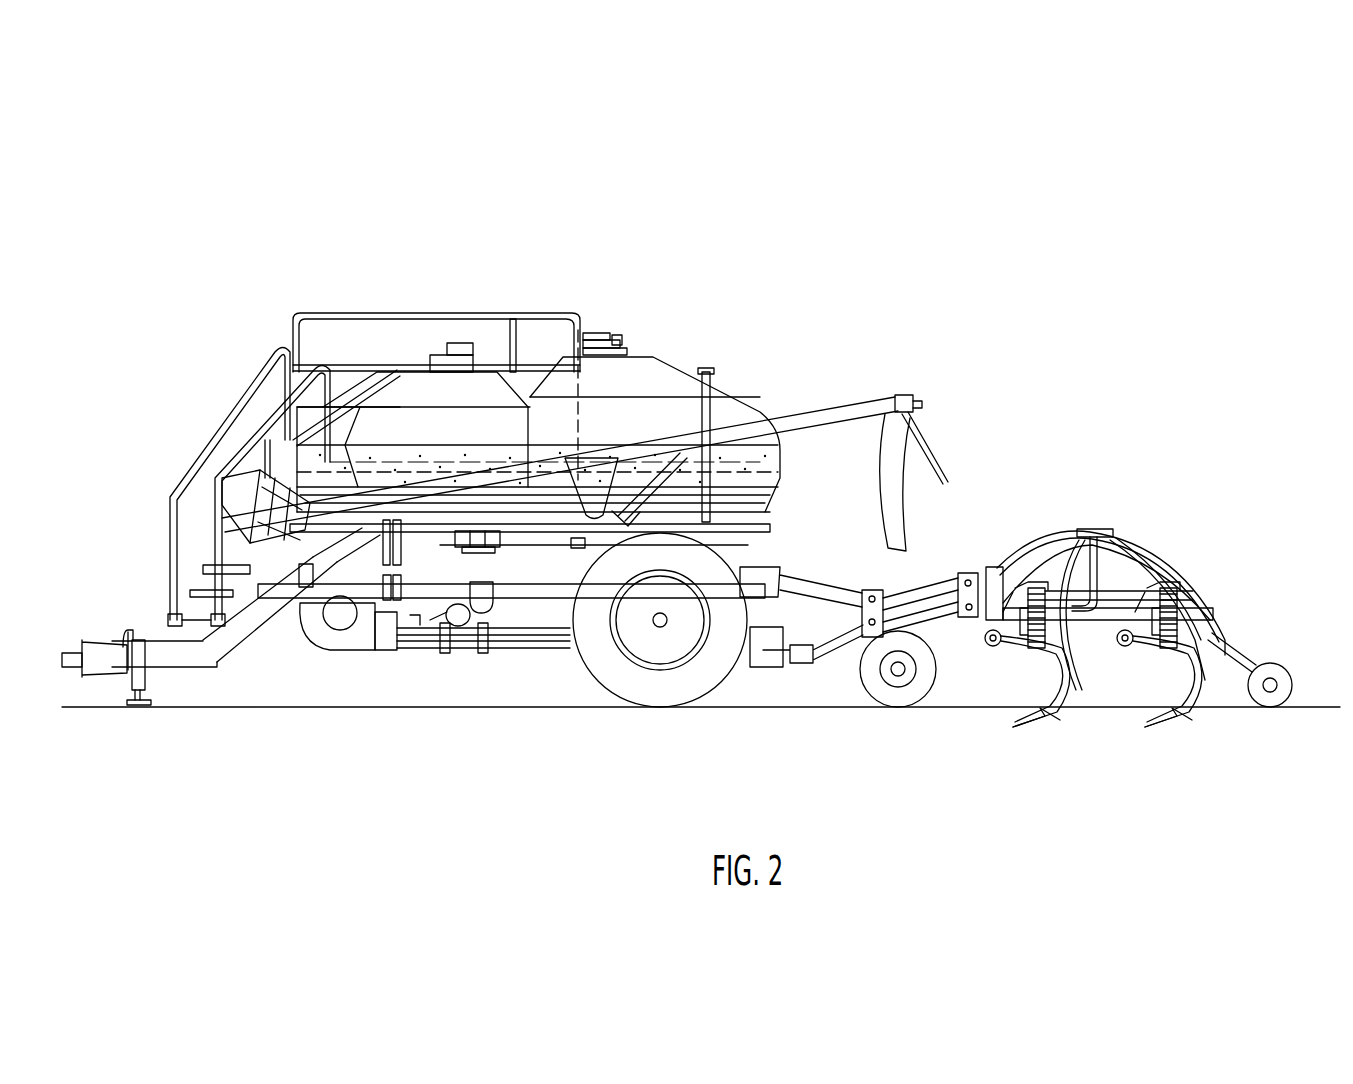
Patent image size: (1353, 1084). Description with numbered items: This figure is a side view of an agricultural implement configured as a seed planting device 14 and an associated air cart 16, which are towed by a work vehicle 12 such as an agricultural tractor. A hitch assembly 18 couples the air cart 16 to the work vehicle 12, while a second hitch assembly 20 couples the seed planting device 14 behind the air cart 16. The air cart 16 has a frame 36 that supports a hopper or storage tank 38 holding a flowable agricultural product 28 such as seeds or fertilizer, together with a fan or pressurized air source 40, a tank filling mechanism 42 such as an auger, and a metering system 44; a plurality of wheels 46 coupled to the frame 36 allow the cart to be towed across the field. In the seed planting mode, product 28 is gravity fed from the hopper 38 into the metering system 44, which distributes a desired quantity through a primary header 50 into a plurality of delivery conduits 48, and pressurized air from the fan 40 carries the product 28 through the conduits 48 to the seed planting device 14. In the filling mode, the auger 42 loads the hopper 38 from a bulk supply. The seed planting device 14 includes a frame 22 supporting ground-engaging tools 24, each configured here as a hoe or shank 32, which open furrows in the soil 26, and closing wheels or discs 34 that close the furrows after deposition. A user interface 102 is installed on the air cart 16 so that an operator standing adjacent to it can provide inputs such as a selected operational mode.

The work vehicle 12 is at (475, 215).
The seed planting device 14 is at (1133, 462).
The air cart 16 is at (178, 160).
The hitch assembly 18 is at (172, 650).
The hitch assembly 20 is at (832, 668).
The frame 22 is at (1100, 634).
The ground-engaging tool 24 is at (1047, 727).
The soil 26 is at (958, 710).
The agricultural product 28 is at (775, 470).
The hoe or shank 32 is at (1067, 722).
The closing wheel or disc 34 is at (1270, 660).
The frame 36 is at (290, 590).
The hopper or storage tank 38 is at (425, 390).
The fan or pressurized air source 40 is at (326, 634).
The tank filling mechanism 42 is at (793, 416).
The metering system 44 is at (428, 673).
The wheels 46 is at (664, 690).
The delivery conduits 48 is at (510, 648).
The primary header 50 is at (462, 652).
The user interface 102 is at (298, 577).